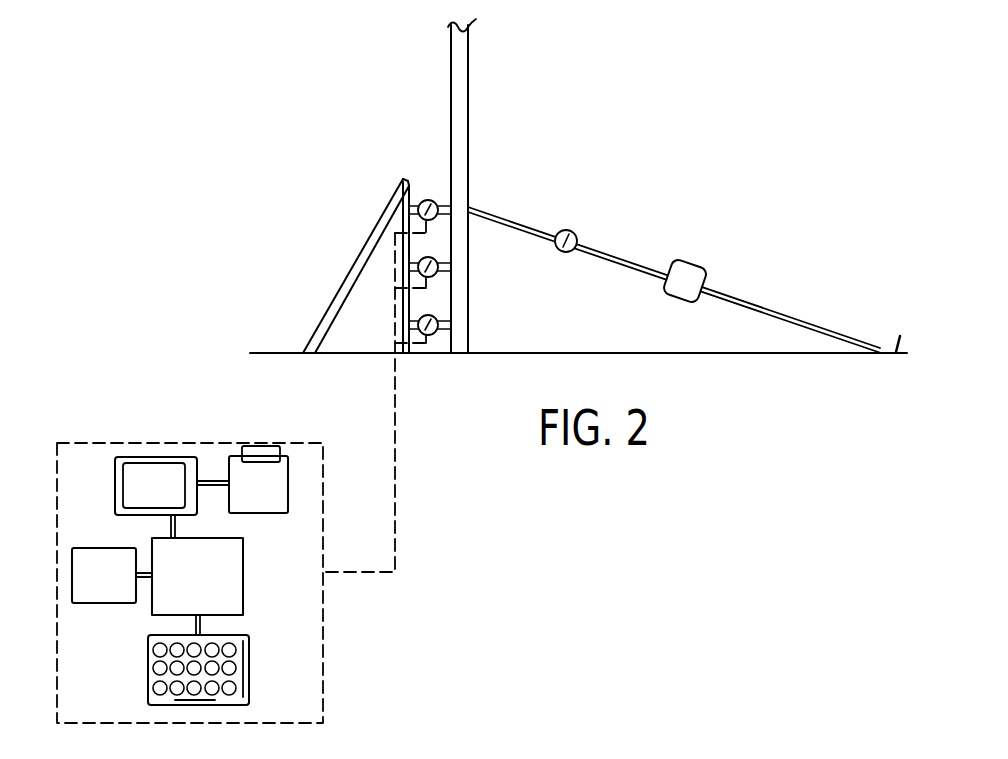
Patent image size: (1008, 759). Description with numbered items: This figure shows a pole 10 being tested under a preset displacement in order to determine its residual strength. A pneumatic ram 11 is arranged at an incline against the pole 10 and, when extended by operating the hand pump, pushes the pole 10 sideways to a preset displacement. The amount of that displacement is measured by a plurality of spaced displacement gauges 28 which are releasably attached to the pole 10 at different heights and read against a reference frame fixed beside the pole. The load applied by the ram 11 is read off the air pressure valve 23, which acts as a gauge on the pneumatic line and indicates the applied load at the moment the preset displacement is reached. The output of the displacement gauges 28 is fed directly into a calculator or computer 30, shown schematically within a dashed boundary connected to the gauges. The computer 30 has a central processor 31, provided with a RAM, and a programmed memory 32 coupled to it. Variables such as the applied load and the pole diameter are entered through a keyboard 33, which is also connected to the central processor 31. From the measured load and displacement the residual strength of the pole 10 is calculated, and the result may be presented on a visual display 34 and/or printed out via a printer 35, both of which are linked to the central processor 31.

The pole 10 is at (472, 104).
The pneumatic ram 11 is at (700, 260).
The air pressure valve 23 is at (569, 229).
The displacement gauges 28 is at (437, 218).
The calculator or computer 30 is at (328, 639).
The central processor 31 is at (205, 591).
The programmed memory 32 is at (113, 591).
The keyboard 33 is at (249, 670).
The visual display 34 is at (165, 498).
The printer 35 is at (269, 498).